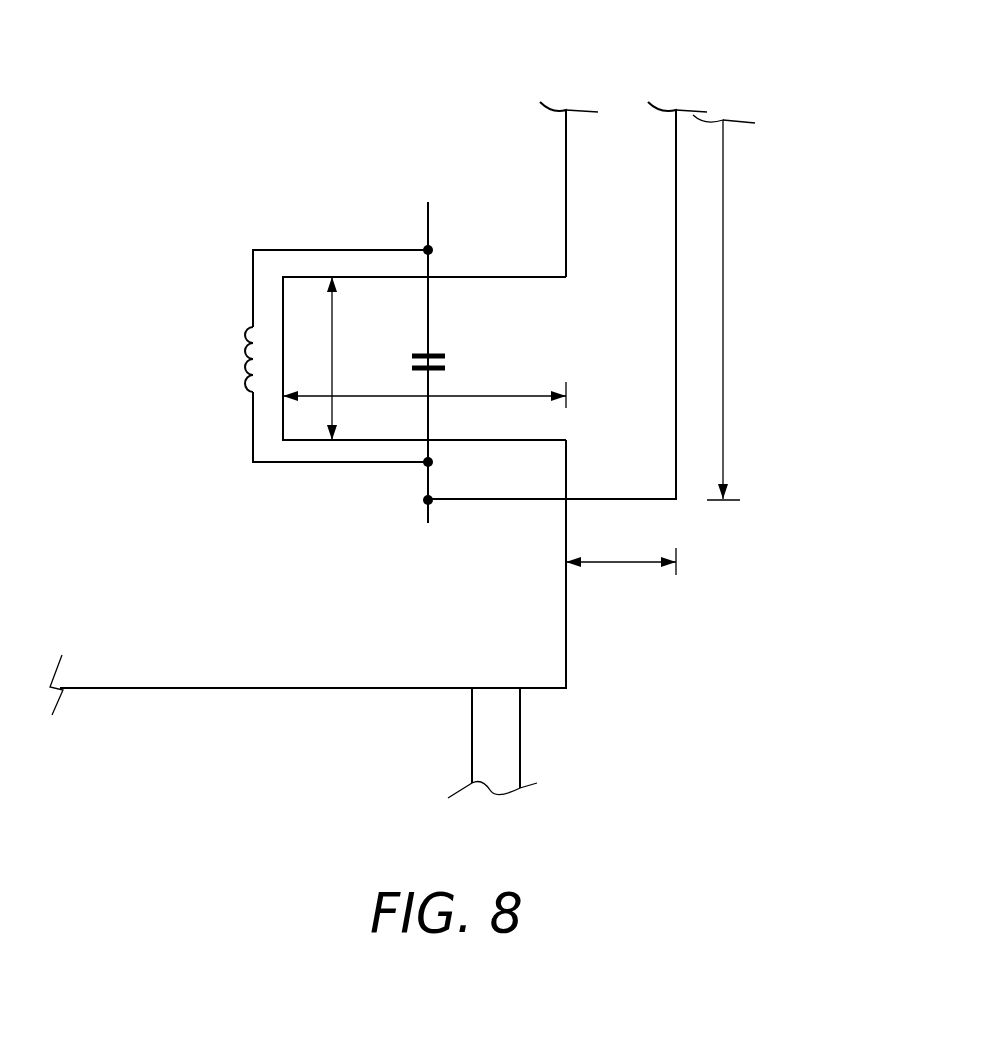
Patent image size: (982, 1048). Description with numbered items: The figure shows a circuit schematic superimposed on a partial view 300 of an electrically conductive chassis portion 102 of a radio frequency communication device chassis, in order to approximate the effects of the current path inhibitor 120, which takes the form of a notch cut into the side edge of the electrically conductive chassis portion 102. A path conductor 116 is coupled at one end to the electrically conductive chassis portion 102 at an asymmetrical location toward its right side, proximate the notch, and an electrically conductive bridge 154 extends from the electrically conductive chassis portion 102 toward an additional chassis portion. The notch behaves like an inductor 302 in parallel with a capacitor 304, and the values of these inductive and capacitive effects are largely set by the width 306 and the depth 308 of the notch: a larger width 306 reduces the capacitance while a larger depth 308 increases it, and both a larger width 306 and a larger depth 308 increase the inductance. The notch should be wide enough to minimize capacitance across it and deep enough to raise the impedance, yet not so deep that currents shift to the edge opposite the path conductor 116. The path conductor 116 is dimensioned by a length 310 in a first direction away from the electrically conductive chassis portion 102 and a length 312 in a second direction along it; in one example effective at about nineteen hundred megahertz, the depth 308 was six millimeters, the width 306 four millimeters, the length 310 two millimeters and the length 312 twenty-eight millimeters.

The partial view 300 is at (800, 74).
The electrically conductive chassis portion 102 is at (247, 679).
The path conductor 116 is at (676, 302).
The electrically conductive bridge 154 is at (507, 735).
The current path inhibitor 120 is at (454, 343).
The inductor 302 is at (240, 351).
The capacitor 304 is at (412, 366).
The width 306 is at (333, 316).
The depth 308 is at (530, 390).
The length 310 is at (620, 565).
The length 312 is at (723, 397).